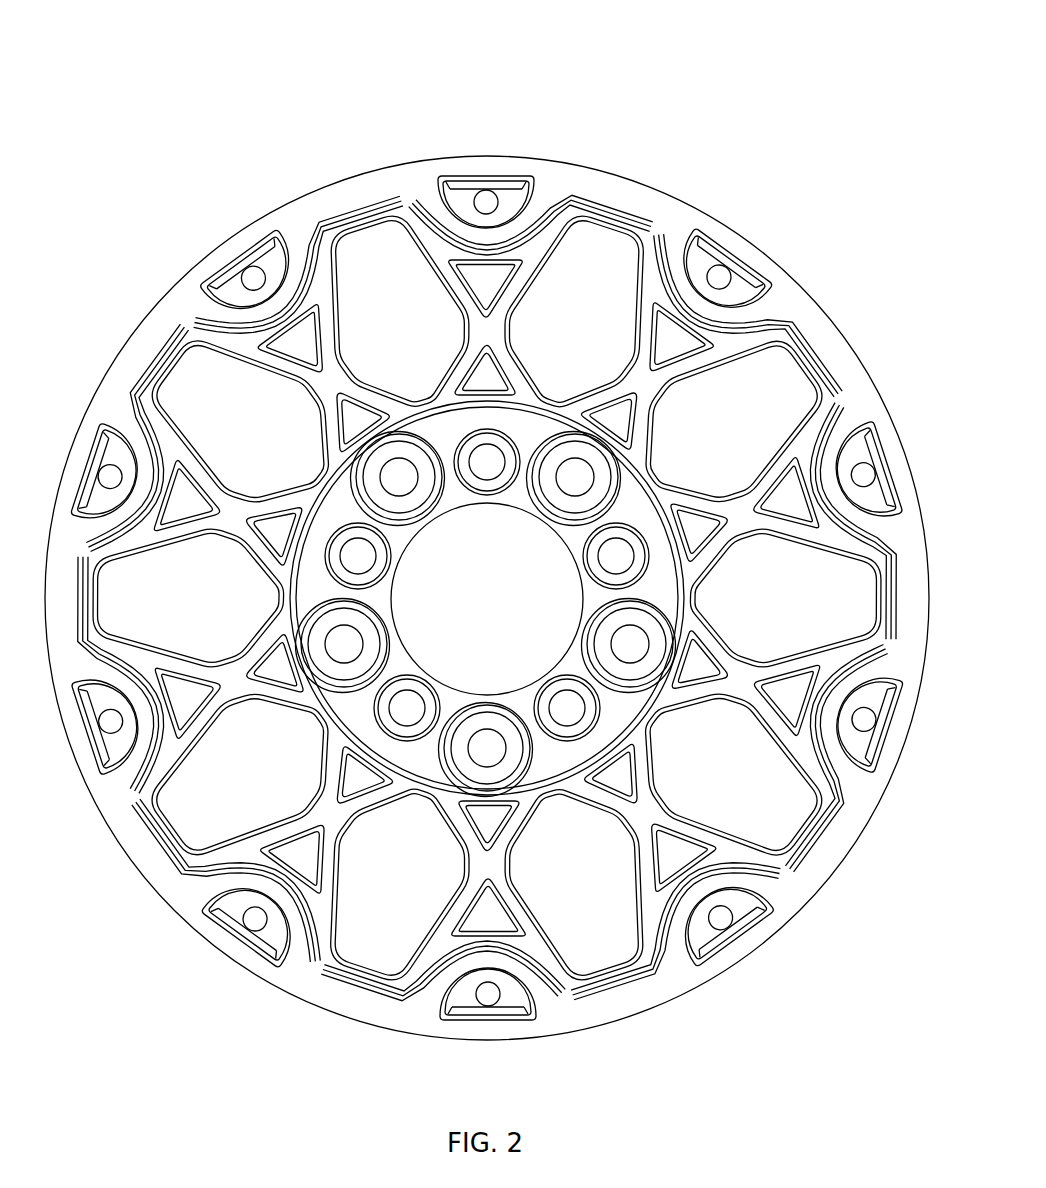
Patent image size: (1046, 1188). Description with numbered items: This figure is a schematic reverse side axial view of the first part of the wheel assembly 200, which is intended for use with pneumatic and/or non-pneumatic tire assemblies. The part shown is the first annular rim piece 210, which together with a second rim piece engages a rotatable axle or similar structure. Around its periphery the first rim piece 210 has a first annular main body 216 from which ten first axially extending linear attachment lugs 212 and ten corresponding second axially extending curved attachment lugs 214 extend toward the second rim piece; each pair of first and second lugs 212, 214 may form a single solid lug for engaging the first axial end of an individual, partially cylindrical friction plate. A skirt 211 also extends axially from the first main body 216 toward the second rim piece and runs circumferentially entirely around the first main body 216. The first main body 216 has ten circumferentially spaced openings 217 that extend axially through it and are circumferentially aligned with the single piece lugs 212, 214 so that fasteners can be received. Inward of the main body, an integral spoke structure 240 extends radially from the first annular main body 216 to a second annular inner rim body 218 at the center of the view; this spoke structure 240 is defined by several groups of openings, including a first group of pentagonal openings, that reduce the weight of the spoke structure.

The wheel assembly 200 is at (757, 99).
The first annular rim piece 210 is at (785, 175).
The skirt 211 is at (818, 350).
The first axially extending linear attachment lug 212 is at (486, 185).
The second axially extending curved attachment lug 214 is at (722, 322).
The first annular main body 216 is at (301, 226).
The opening 217 is at (718, 280).
The second annular inner rim body 218 is at (395, 523).
The integral spoke structure 240 is at (740, 708).